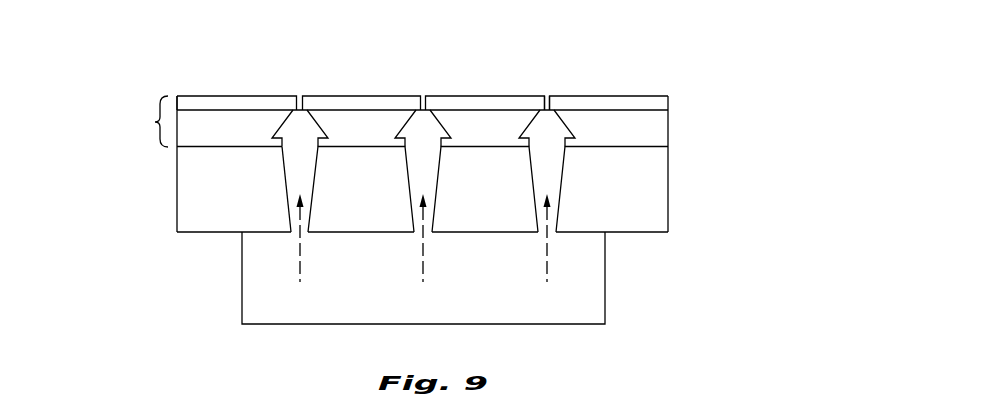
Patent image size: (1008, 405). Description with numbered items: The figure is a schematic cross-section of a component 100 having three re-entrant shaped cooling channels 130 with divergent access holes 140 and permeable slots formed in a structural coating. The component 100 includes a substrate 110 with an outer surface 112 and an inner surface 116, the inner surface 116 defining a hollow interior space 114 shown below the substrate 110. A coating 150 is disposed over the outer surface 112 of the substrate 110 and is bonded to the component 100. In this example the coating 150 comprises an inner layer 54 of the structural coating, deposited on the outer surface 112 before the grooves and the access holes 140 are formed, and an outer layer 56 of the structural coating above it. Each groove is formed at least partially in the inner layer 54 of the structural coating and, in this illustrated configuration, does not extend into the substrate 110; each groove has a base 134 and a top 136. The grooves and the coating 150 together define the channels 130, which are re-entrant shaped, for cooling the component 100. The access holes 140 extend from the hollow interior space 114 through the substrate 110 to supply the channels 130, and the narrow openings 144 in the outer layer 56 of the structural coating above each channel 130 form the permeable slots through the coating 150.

The component 100 is at (40, 152).
The inner layer of the structural coating 54 is at (212, 102).
The outer layer of the structural coating 56 is at (655, 127).
The substrate 110 is at (652, 179).
The outer surface 112 is at (183, 154).
The hollow interior space 114 is at (583, 277).
The inner surface 116 is at (203, 233).
The channel 130 is at (312, 122).
The base 134 is at (577, 142).
The top 136 is at (556, 100).
The access hole 140 is at (286, 177).
The gap 144 is at (299, 92).
The coating 150 is at (282, 121).